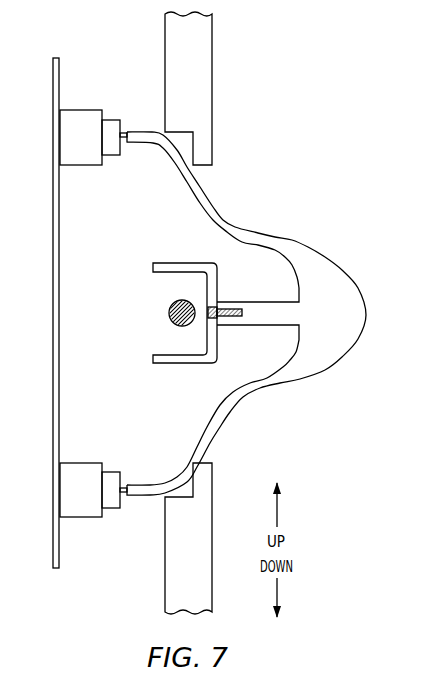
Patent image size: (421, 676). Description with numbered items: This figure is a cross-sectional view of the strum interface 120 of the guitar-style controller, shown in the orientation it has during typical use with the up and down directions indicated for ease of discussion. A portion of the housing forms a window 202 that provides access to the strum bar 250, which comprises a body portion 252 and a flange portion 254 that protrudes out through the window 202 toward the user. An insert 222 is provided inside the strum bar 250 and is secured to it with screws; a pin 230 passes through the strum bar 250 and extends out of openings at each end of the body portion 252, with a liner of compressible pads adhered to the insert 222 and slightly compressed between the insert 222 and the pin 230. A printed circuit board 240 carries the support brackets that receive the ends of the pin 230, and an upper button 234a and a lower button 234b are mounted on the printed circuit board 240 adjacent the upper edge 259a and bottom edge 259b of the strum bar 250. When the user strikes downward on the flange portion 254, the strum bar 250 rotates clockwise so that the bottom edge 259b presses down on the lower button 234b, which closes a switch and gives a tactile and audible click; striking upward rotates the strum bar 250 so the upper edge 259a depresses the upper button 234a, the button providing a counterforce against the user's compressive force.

The strum interface 120 is at (315, 72).
The window 202 is at (212, 50).
The insert 222 is at (168, 360).
The pin 230 is at (169, 311).
The upper button 234a is at (83, 113).
The lower button 234b is at (87, 512).
The printed circuit board 240 is at (53, 428).
The strum bar 250 is at (262, 313).
The body portion 252 is at (205, 200).
The flange portion 254 is at (355, 297).
The upper edge 259a is at (122, 147).
The bottom edge 259b is at (122, 480).